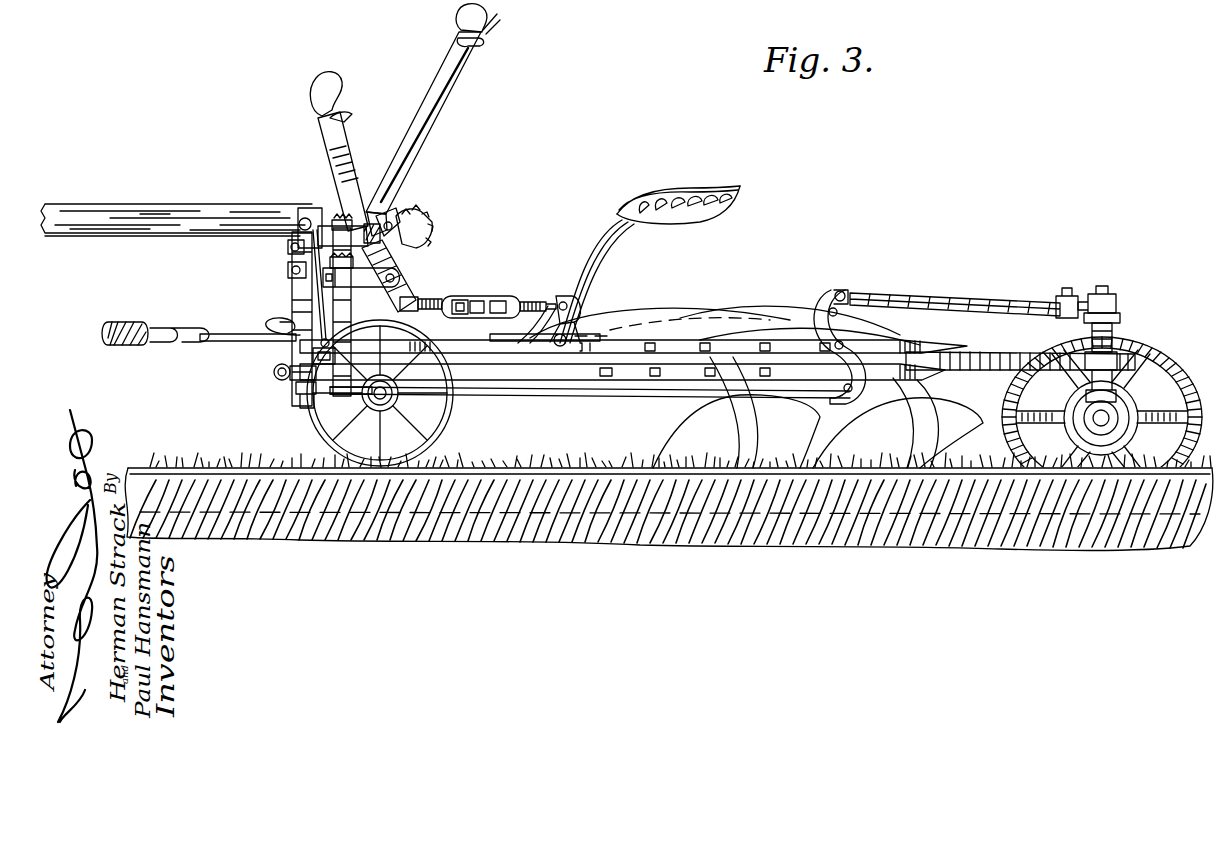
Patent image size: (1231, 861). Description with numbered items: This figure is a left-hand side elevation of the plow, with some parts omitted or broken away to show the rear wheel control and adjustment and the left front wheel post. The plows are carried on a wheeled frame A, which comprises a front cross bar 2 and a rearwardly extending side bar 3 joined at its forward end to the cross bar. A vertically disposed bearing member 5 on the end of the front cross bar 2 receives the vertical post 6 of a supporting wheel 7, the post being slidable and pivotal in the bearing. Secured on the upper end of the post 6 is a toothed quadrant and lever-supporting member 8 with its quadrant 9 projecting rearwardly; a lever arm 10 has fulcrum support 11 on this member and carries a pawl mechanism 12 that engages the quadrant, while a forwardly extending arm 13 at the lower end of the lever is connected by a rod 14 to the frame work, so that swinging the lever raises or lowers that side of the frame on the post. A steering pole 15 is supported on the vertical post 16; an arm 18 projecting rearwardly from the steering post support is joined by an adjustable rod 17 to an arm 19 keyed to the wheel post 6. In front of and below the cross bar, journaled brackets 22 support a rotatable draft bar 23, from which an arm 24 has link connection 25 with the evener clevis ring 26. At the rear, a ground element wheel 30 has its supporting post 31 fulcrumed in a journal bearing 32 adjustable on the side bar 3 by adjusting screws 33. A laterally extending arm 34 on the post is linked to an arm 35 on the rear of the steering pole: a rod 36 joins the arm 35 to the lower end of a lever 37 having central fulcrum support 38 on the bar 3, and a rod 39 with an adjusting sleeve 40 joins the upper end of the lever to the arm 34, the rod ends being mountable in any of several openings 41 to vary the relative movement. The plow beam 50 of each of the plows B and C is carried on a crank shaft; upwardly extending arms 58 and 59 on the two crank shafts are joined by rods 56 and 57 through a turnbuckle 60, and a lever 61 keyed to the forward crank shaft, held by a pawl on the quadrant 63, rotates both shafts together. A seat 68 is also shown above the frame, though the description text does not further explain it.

The front cross bar 2 is at (318, 356).
The side bar 3 is at (944, 368).
The bearing member 5 is at (349, 401).
The vertical post 6 is at (347, 312).
The supporting wheel 7 is at (318, 438).
The toothed quadrant and lever-supporting member 8 is at (342, 222).
The quadrant 9 is at (424, 230).
The lever arm 10 is at (438, 102).
The fulcrum support 11 is at (392, 222).
The pawl mechanism 12 is at (482, 42).
The forwardly extending arm 13 is at (330, 230).
The rod 14 is at (288, 250).
The steering pole 15 is at (180, 212).
The vertical post 16 is at (288, 268).
The adjustable rod 17 is at (382, 254).
The arm 18 is at (300, 282).
The arm 19 is at (392, 281).
The journaled bracket 22 is at (292, 378).
The draft bar 23 is at (276, 374).
The arm 24 is at (290, 348).
The link connection 25 is at (232, 337).
The evener clevis ring 26 is at (180, 340).
The ground element wheel 30 is at (1160, 358).
The supporting post 31 is at (1118, 406).
The journal bearing 32 is at (1110, 330).
The adjusting screw 33 is at (1116, 352).
The laterally extending arm 34 is at (1112, 314).
The arm 35 is at (298, 396).
The rod 36 is at (574, 396).
The lever 37 is at (852, 284).
The fulcrum support 38 is at (843, 345).
The rod 39 is at (1100, 294).
The adjusting sleeve 40 is at (984, 298).
The openings 41 is at (830, 308).
The plow beam 50 is at (756, 325).
The rod 56 is at (434, 299).
The rod 57 is at (552, 302).
The upwardly extending arm 58 is at (478, 292).
The upwardly extending arm 59 is at (568, 312).
The turnbuckle 60 is at (498, 296).
The lever 61 is at (338, 128).
The quadrant 63 is at (414, 298).
The seat 68 is at (688, 194).
The wheeled frame A is at (624, 345).
The plow B is at (668, 438).
The plow C is at (856, 432).